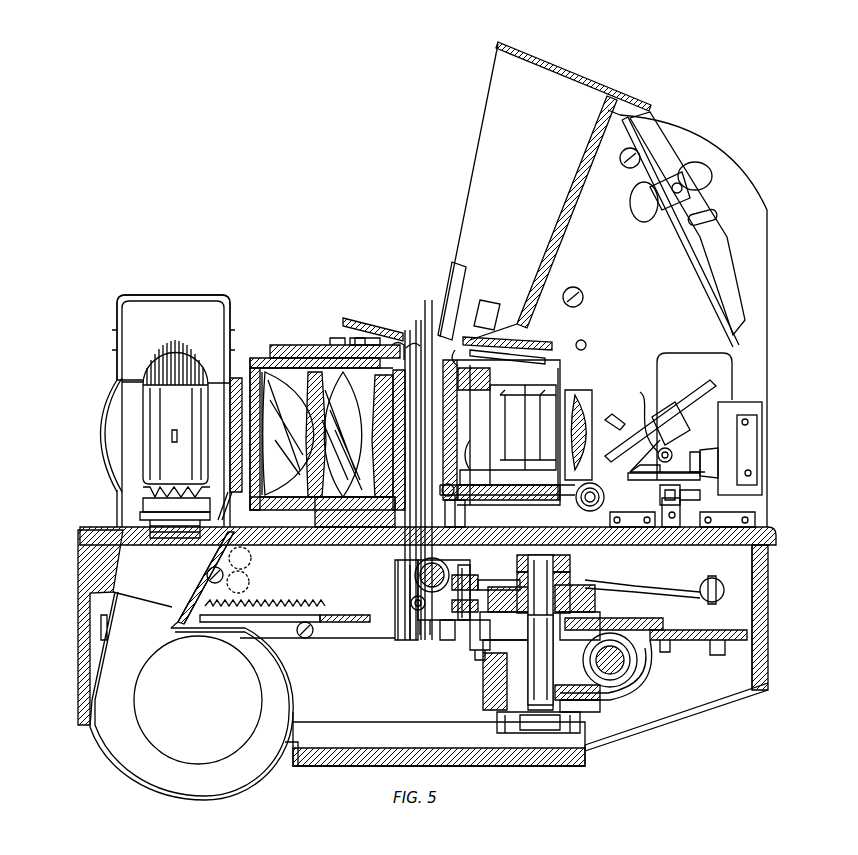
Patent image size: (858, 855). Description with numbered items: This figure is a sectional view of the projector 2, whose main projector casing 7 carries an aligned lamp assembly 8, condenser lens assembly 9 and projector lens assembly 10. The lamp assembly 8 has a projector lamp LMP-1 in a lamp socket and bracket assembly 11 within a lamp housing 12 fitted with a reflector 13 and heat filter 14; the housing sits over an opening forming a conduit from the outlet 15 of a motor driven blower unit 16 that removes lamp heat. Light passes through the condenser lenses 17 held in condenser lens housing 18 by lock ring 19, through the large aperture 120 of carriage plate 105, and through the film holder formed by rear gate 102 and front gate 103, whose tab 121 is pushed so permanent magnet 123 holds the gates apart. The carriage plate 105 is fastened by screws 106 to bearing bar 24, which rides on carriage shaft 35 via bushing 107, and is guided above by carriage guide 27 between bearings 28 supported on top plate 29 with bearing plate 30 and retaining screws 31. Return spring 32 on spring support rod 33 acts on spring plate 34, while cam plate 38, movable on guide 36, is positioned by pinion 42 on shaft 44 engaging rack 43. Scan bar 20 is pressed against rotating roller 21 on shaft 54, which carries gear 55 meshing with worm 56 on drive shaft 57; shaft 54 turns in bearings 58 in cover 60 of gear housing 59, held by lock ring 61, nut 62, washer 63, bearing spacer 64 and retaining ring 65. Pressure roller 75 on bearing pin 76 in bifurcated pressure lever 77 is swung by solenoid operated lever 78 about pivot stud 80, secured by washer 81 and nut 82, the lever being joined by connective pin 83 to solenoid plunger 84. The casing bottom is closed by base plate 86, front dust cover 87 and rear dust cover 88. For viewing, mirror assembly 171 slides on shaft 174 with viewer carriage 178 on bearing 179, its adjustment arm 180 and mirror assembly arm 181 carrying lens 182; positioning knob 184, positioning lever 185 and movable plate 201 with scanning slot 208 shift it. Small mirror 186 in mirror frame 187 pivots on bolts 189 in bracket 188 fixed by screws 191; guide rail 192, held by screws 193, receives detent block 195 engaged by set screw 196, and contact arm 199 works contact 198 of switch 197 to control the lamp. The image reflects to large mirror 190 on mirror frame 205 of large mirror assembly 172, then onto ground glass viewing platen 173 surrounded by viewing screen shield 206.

The projector 2 is at (74, 548).
The main projector casing 7 is at (78, 574).
The lamp assembly 8 is at (106, 320).
The condenser lens assembly 9 is at (276, 516).
The projector lens assembly 10 is at (563, 385).
The lamp socket and bracket assembly 11 is at (212, 494).
The lamp housing 12 is at (172, 298).
The reflector 13 is at (94, 404).
The heat filter 14 is at (240, 376).
The outlet 15 is at (116, 606).
The motor driven blower unit 16 is at (276, 667).
The condenser lens 17 is at (300, 390).
The condenser lens housing 18 is at (280, 358).
The lock ring 19 is at (234, 504).
The scan bar 20 is at (493, 606).
The roller 21 is at (588, 598).
The bearing bar 24 is at (468, 568).
The carriage guide 27 is at (380, 436).
The bearings 28 is at (396, 330).
The top plate 29 is at (326, 350).
The bearing plate 30 is at (330, 344).
The bearing retaining screws 31 is at (363, 334).
The return spring 32 is at (412, 625).
The spring support rod 33 is at (422, 638).
The spring plate 34 is at (430, 628).
The carriage shaft 35 is at (436, 562).
The guide 36 is at (326, 636).
The cam plate 38 is at (356, 614).
The pinion 42 is at (236, 558).
The rack 43 is at (256, 596).
The shaft 44 is at (224, 574).
The shaft 54 is at (546, 556).
The gear 55 is at (578, 708).
The worm 56 is at (614, 640).
The drive shaft 57 is at (577, 689).
The bearings 58 is at (586, 618).
The gear housing 59 is at (654, 668).
The cover 60 is at (626, 618).
The threaded lock ring 61 is at (538, 730).
The nut 62 is at (562, 731).
The bearing retaining washer 63 is at (540, 731).
The bearing spacer 64 is at (544, 618).
The retaining ring 65 is at (543, 632).
The pressure roller 75 is at (431, 606).
The bearing pin 76 is at (484, 570).
The bifurcated pressure lever 77 is at (499, 574).
The solenoid operated lever 78 is at (606, 580).
The pivot stud 80 is at (478, 622).
The washer 81 is at (448, 642).
The nut 82 is at (472, 660).
The connective pin 83 is at (712, 580).
The plunger 84 is at (717, 594).
The base plate 86 is at (540, 764).
The front dust cover 87 is at (672, 704).
The rear dust cover 88 is at (292, 760).
The rear gate 102 is at (396, 340).
The front gate 103 is at (414, 340).
The carriage plate 105 is at (396, 560).
The screws 106 is at (392, 580).
The bushing 107 is at (466, 588).
The large aperture 120 is at (355, 512).
The tab 121 is at (432, 300).
The permanent magnet 123 is at (428, 322).
The mirror assembly 171 is at (666, 394).
The large mirror assembly 172 is at (732, 224).
The ground glass viewing platen 173 is at (595, 154).
The shaft 174 is at (575, 493).
The viewer carriage 178 is at (580, 503).
The bearing 179 is at (576, 507).
The adjustment arm 180 is at (478, 506).
The mirror assembly arm 181 is at (632, 515).
The lens 182 is at (590, 404).
The positioning knob 184 is at (460, 262).
The positioning lever 185 is at (472, 306).
The small mirror 186 is at (700, 392).
The mirror frame 187 is at (682, 410).
The bracket 188 is at (640, 394).
The bolts 189 is at (640, 423).
The large mirror 190 is at (682, 250).
The screws 191 is at (656, 487).
The guide rail 192 is at (722, 497).
The screws 193 is at (690, 514).
The detent block 195 is at (674, 495).
The set screw 196 is at (706, 500).
The electrical switch 197 is at (746, 400).
The contact 198 is at (712, 446).
The contact arm 199 is at (668, 450).
The movable plate 201 is at (480, 475).
The mirror frame 205 is at (740, 258).
The viewing screen shield 206 is at (560, 60).
The scanning slot 208 is at (464, 418).
The projector lamp LMP-1 is at (176, 345).